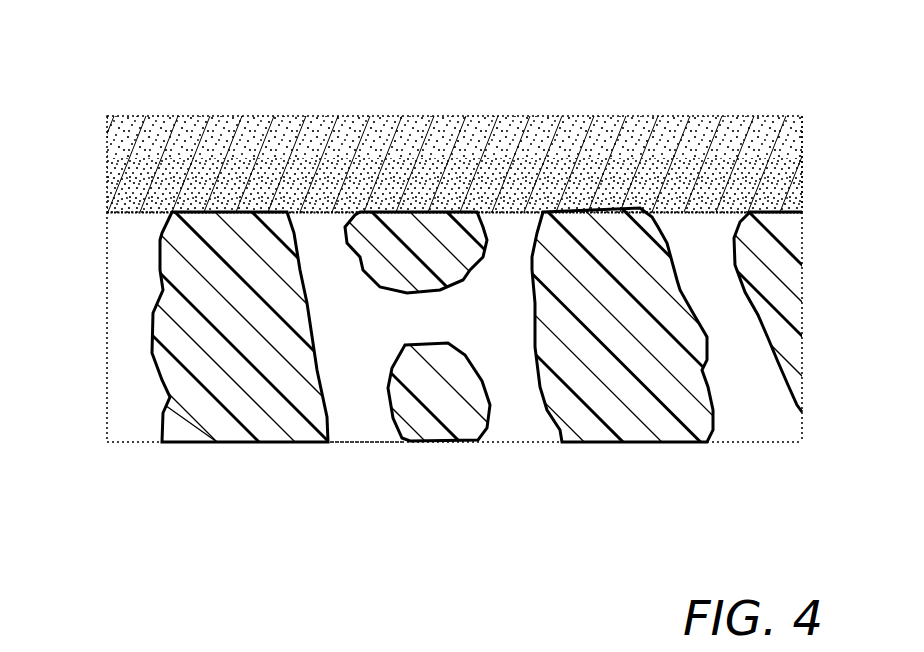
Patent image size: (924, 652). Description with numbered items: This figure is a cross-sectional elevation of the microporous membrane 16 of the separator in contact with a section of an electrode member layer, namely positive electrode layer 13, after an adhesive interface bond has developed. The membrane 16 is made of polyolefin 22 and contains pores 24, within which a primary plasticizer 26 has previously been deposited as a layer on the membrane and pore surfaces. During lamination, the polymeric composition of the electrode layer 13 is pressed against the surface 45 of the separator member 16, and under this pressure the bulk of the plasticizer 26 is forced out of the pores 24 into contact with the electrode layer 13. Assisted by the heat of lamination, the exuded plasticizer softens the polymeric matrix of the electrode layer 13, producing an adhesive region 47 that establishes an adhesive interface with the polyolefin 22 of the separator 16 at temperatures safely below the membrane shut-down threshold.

The positive electrode layer 13 is at (446, 119).
The adhesive region 47 is at (107, 195).
The surface of separator member 45 is at (805, 200).
The microporous membrane 16 is at (462, 418).
The polyolefin 22 is at (223, 427).
The pores 24 is at (115, 335).
The plasticizer layer 26 is at (803, 412).